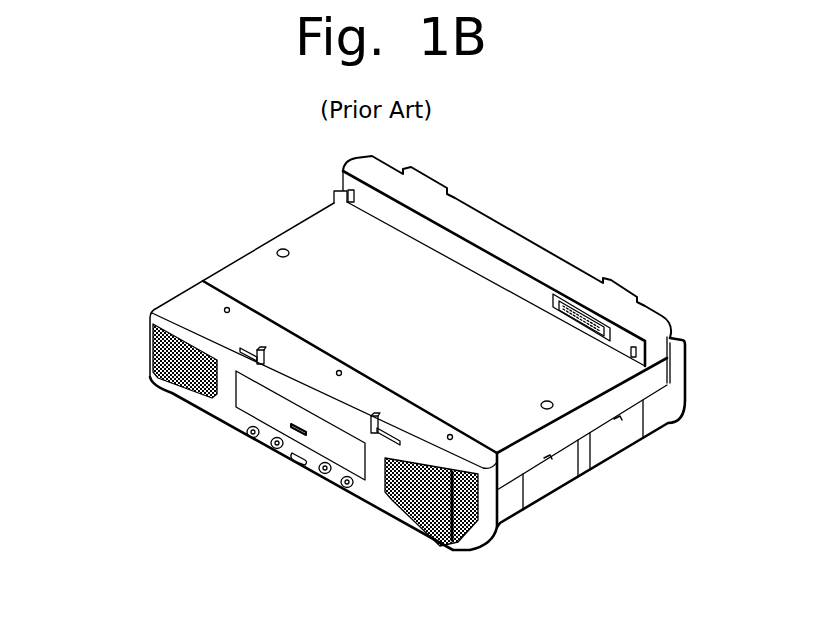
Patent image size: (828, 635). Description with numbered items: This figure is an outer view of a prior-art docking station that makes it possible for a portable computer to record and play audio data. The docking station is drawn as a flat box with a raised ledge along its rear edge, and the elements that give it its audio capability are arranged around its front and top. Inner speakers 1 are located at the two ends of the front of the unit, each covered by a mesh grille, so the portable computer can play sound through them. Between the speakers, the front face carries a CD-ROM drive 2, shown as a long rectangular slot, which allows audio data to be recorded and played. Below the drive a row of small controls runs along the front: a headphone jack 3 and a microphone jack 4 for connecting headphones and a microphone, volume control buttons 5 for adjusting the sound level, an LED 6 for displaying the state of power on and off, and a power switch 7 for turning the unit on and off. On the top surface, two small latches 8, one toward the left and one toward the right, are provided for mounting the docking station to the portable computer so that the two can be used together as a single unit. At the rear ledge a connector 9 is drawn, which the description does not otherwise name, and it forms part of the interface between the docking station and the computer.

The inner speakers 1 is at (150, 346).
The CD-ROM drive 2 is at (247, 393).
The headphone jack 3 is at (248, 438).
The microphone jack 4 is at (273, 452).
The volume control buttons 5 is at (300, 464).
The LED for displaying the state of power on/off 6 is at (325, 475).
The power switch 7 is at (347, 489).
The latches 8 is at (256, 350).
The connector 9 is at (572, 300).